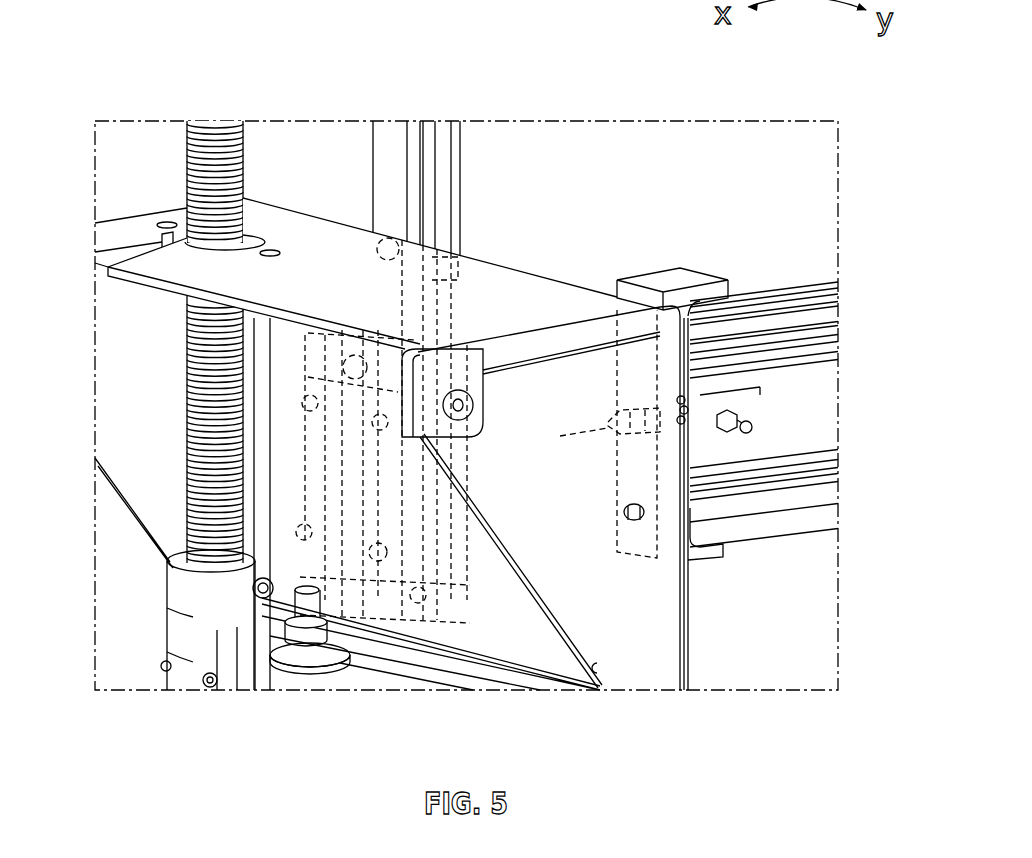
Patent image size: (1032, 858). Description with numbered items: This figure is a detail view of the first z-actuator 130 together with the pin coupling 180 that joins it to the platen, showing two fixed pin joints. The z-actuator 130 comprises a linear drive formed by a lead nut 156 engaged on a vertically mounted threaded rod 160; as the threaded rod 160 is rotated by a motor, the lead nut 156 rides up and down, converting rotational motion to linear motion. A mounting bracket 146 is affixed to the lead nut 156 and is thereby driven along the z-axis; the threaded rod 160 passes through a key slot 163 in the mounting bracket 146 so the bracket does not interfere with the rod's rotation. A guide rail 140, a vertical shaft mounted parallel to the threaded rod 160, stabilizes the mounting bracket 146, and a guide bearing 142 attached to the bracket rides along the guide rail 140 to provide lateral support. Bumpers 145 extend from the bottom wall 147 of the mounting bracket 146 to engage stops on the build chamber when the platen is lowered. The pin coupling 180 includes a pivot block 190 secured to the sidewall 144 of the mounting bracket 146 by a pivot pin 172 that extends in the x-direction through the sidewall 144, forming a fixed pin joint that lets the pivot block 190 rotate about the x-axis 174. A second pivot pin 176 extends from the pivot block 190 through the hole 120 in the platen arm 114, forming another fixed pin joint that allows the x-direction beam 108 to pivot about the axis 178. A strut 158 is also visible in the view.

The x-direction beam 108 is at (830, 293).
The platen arm 114 is at (781, 298).
The hole 120 is at (660, 423).
The z-actuator 130 is at (135, 707).
The guide rail 140 is at (450, 137).
The guide bearing 142 is at (363, 318).
The sidewall 144 is at (572, 285).
The bumper 145 is at (300, 692).
The mounting bracket 146 is at (492, 300).
The bottom wall 147 is at (465, 692).
The lead nut 156 is at (190, 632).
The strut 158 is at (170, 545).
The threaded rod 160 is at (226, 142).
The key slot 163 is at (123, 262).
The pivot pin 172 is at (730, 432).
The x-axis 174 is at (793, 393).
The pivot pin 176 is at (745, 410).
The axis 178 is at (781, 437).
The pin coupling 180 is at (636, 470).
The pivot block 190 is at (683, 277).